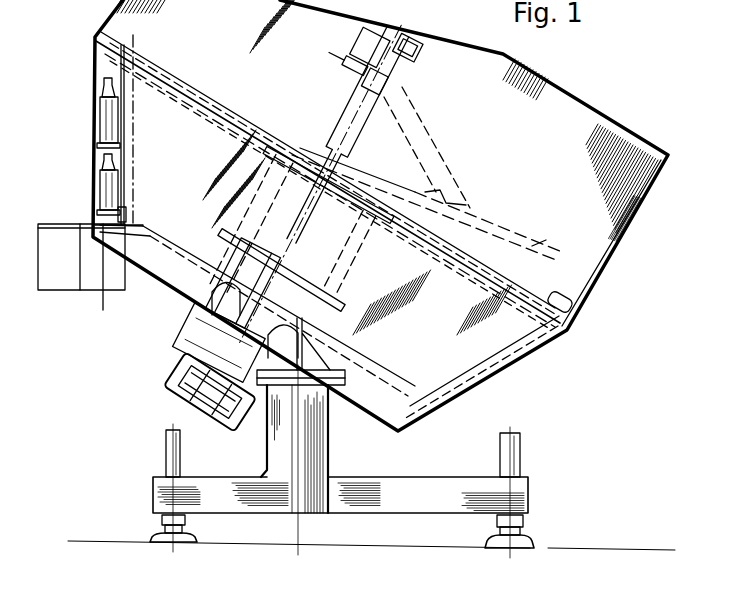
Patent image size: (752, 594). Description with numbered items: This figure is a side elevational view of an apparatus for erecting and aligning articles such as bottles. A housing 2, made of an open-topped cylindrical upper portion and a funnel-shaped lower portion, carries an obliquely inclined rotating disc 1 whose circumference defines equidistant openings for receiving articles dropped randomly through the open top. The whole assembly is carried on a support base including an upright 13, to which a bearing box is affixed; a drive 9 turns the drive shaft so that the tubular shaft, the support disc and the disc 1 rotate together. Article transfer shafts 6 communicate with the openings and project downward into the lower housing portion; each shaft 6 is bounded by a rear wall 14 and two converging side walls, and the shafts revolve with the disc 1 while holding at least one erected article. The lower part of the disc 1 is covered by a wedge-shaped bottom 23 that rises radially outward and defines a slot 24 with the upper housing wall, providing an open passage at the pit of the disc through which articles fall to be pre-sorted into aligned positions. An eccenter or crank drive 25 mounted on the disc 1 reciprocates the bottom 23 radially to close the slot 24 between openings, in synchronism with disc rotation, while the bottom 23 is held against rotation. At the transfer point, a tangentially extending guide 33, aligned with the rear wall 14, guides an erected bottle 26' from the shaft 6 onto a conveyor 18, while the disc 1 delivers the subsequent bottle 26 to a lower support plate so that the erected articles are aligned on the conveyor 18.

The rotating disc 1 is at (193, 80).
The housing 2 is at (647, 206).
The article transfer shafts 6 is at (510, 347).
The drive 9 is at (172, 382).
The upright 13 is at (313, 457).
The rear wall 14 is at (132, 148).
The conveyor 18 is at (60, 283).
The wedge-shaped bottom 23 is at (530, 253).
The slot 24 is at (590, 262).
The eccenter or crank drive 25 is at (377, 40).
The bottle 26 is at (89, 113).
The bottle 26' is at (82, 184).
The tangentially extending guide 33 is at (134, 215).